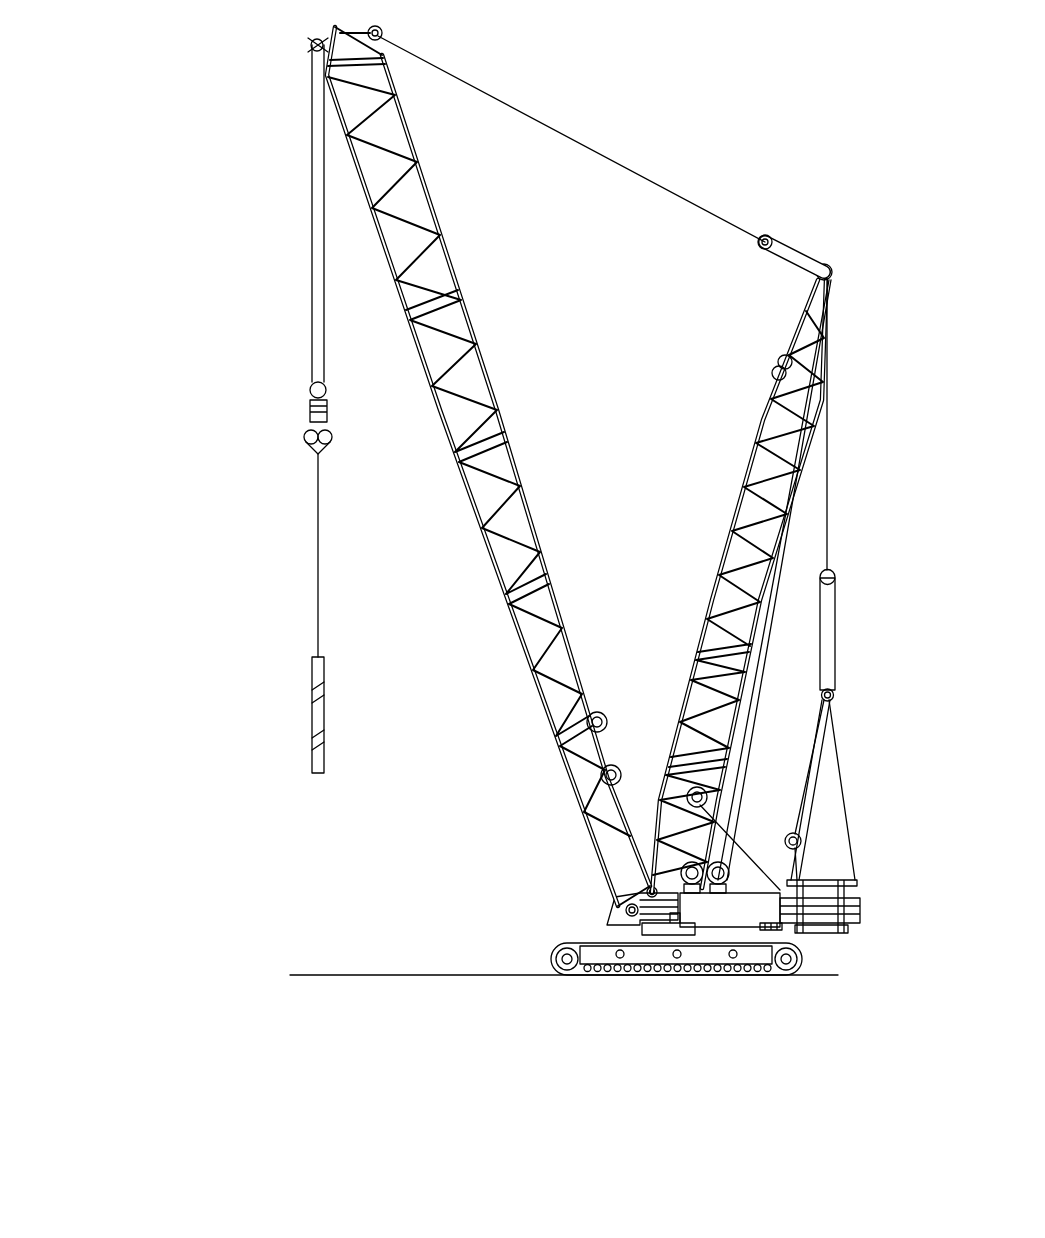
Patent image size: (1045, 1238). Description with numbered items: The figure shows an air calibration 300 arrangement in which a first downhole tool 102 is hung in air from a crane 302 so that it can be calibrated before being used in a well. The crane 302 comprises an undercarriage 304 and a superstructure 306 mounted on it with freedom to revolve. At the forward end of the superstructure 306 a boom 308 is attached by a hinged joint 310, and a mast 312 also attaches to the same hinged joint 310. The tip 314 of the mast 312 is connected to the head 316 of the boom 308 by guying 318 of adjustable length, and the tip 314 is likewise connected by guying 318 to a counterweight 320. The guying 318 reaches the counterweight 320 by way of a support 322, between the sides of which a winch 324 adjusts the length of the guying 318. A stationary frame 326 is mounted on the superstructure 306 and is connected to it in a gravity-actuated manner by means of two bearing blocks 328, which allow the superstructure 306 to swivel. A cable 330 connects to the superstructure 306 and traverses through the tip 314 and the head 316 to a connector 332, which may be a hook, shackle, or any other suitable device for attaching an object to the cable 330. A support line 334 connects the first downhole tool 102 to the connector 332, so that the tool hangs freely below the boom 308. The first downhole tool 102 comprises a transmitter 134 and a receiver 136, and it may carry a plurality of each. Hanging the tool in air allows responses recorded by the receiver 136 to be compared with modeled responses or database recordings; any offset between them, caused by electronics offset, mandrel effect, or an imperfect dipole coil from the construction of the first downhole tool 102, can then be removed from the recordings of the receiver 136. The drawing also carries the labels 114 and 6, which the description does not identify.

The air calibration 300 is at (130, 104).
The crane 302 is at (803, 191).
The undercarriage 304 is at (705, 948).
The superstructure 306 is at (645, 930).
The boom 308 is at (488, 495).
The hinged joint 310 is at (626, 908).
The mast 312 is at (748, 512).
The tip 314 is at (822, 290).
The head 316 is at (312, 50).
The guying 318 is at (800, 250).
The counterweight 320 is at (852, 900).
The support 322 is at (818, 778).
The winch 324 is at (800, 838).
The stationary frame 326 is at (755, 945).
The bearing blocks 328 is at (677, 935).
The cable 330 is at (564, 134).
The connector 332 is at (308, 408).
The support line 334 is at (316, 552).
The first downhole tool 102 is at (312, 712).
The transmitter 134 is at (326, 688).
The receiver 136 is at (326, 738).
The ground 114 is at (345, 975).
The boom section 6 is at (598, 858).